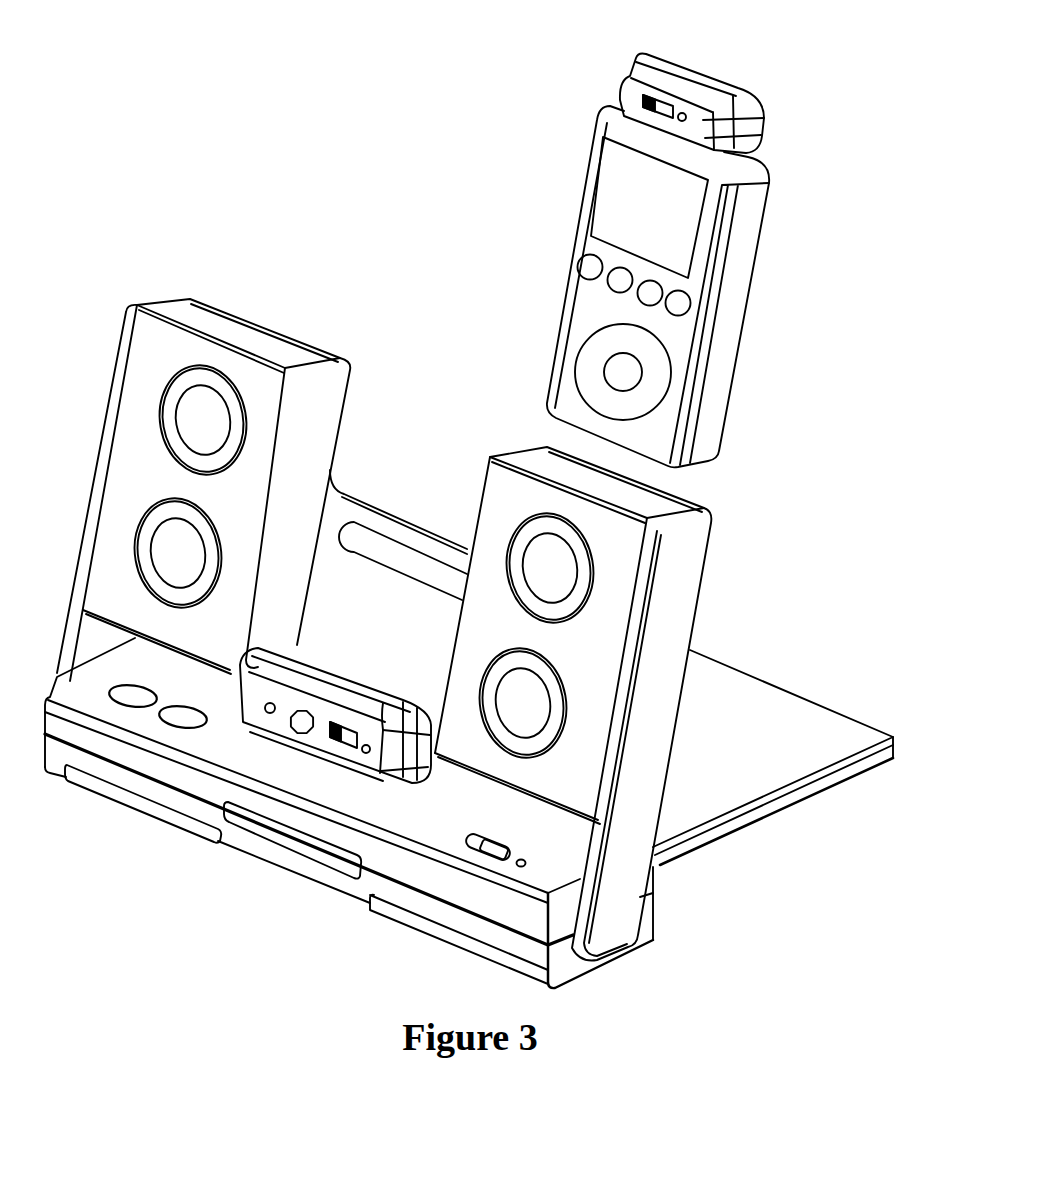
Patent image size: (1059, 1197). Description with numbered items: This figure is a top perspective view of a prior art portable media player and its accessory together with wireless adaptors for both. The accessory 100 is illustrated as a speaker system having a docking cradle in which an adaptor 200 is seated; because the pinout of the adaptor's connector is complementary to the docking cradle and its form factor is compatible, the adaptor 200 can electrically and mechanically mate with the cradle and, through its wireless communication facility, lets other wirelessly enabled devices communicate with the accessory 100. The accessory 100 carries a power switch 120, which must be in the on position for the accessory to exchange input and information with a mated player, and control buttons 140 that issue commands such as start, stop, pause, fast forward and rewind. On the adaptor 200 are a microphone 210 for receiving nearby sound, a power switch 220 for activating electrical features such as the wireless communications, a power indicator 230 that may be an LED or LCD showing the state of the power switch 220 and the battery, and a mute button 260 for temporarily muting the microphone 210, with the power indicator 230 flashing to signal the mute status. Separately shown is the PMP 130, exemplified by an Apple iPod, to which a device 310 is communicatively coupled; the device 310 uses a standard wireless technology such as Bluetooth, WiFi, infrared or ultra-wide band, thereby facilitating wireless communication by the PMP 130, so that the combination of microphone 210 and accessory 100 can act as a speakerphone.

The accessory 100 is at (278, 304).
The power switch 120 is at (491, 824).
The PMP 130 is at (553, 255).
The control buttons 140 is at (161, 684).
The adaptor 200 is at (342, 649).
The microphone 210 is at (278, 733).
The power switch 220 is at (324, 750).
The power indicator 230 is at (349, 761).
The mute button 260 is at (253, 720).
The device 310 is at (766, 70).